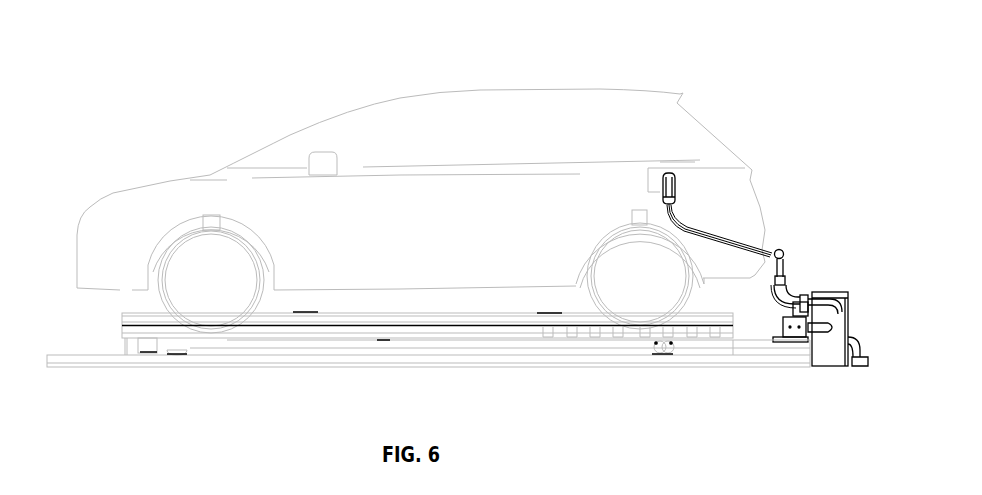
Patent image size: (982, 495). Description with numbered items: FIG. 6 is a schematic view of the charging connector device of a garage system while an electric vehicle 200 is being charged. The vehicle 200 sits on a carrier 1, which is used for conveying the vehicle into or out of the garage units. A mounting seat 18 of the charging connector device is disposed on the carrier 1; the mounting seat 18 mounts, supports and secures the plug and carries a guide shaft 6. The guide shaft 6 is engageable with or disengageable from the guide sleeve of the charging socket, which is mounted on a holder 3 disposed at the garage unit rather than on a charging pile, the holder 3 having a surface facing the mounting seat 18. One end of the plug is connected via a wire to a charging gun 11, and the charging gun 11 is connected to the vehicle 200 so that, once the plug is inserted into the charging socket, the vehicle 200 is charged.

The vehicle 200 is at (378, 135).
The charging gun 11 is at (673, 187).
The mounting seat 18 is at (803, 297).
The guide shaft 6 is at (823, 320).
The holder 3 is at (827, 360).
The carrier 1 is at (757, 345).